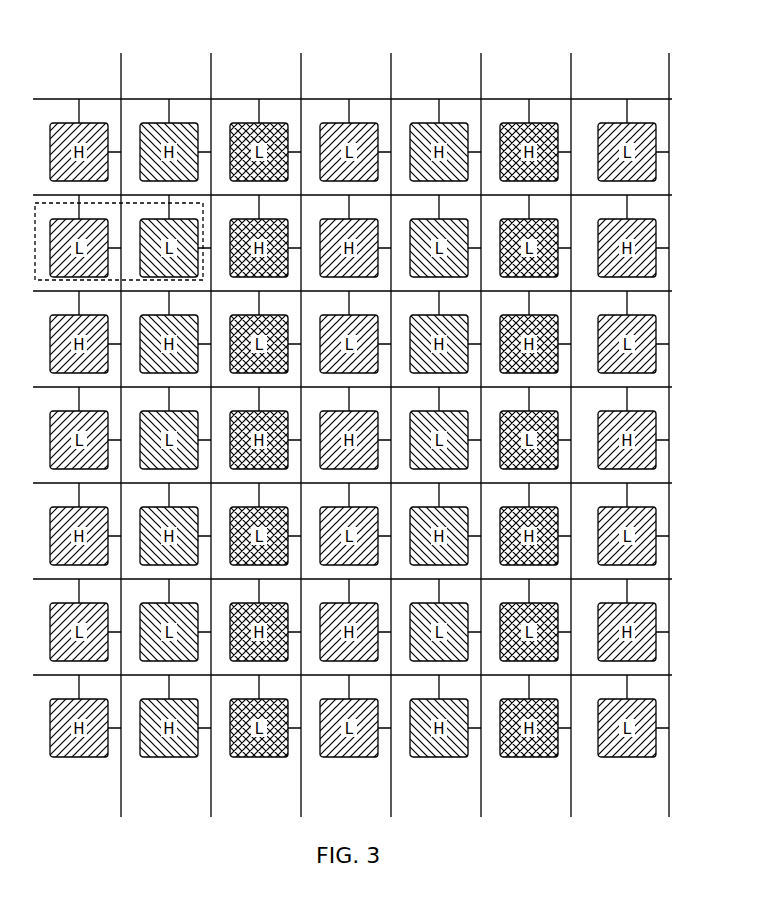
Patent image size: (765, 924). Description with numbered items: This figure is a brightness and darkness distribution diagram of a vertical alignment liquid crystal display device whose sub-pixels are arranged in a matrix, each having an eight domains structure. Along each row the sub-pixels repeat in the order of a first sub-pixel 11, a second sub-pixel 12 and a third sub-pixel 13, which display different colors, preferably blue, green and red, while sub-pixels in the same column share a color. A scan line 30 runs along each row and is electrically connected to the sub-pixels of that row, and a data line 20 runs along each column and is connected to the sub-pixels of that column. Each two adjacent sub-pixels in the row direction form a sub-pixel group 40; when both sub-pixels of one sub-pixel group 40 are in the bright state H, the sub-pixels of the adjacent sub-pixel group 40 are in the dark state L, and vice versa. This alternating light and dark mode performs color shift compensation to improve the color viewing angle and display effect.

The first sub-pixel 11 is at (63, 130).
The second sub-pixel 12 is at (172, 127).
The third sub-pixel 13 is at (254, 125).
The data line 20 is at (392, 65).
The scan line 30 is at (512, 95).
The sub-pixel group 40 is at (36, 282).